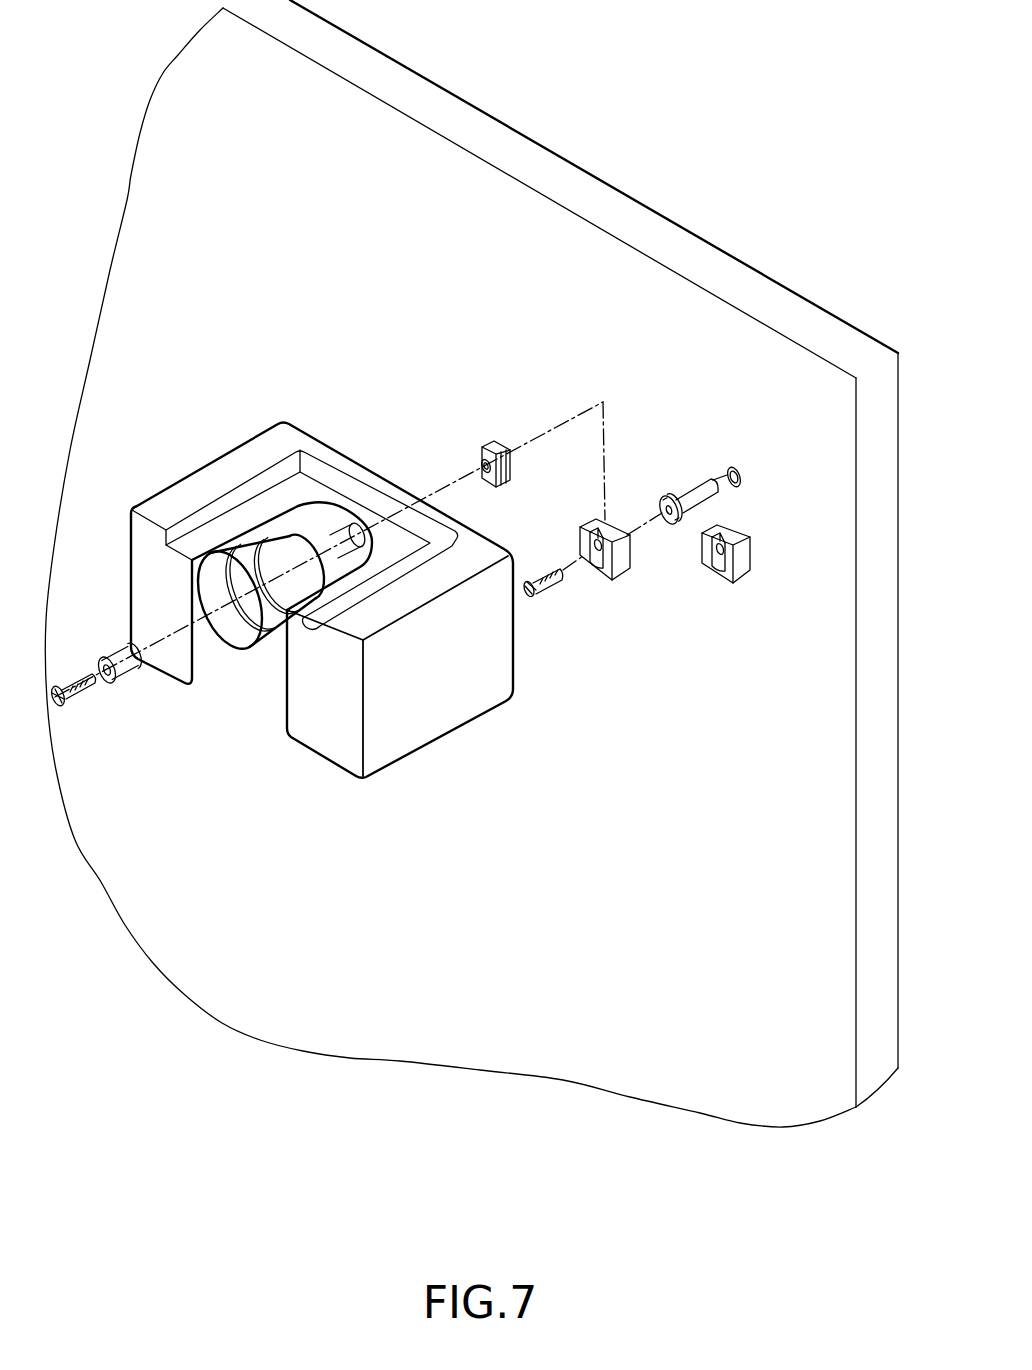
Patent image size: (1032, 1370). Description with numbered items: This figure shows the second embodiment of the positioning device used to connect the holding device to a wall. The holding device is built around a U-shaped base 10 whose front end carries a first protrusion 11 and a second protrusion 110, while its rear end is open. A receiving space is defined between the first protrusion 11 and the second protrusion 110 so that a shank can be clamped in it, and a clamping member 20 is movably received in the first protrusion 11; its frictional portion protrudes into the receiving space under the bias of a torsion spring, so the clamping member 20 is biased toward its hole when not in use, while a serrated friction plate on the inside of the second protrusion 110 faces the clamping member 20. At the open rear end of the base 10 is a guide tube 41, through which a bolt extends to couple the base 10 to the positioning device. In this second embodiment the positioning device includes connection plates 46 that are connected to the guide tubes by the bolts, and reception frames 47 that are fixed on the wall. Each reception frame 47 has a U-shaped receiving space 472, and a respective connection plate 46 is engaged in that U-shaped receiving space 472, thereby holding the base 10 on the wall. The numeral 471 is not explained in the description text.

The U-shaped base 10 is at (333, 432).
The first protrusion 11 is at (212, 468).
The second protrusion 110 is at (406, 596).
The clamping member 20 is at (231, 660).
The guide tube 41 is at (372, 522).
The connection plate 46 is at (497, 446).
The reception frame 47 is at (623, 567).
The slot 471 is at (594, 531).
The U-shaped receiving space 472 is at (594, 565).